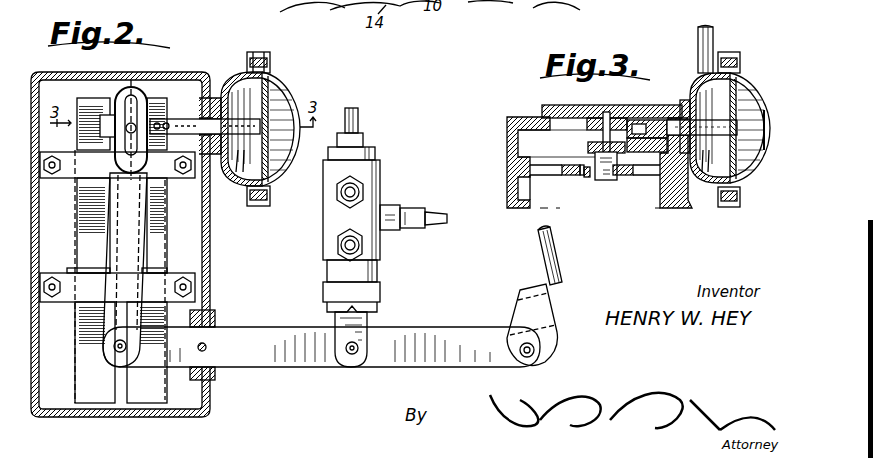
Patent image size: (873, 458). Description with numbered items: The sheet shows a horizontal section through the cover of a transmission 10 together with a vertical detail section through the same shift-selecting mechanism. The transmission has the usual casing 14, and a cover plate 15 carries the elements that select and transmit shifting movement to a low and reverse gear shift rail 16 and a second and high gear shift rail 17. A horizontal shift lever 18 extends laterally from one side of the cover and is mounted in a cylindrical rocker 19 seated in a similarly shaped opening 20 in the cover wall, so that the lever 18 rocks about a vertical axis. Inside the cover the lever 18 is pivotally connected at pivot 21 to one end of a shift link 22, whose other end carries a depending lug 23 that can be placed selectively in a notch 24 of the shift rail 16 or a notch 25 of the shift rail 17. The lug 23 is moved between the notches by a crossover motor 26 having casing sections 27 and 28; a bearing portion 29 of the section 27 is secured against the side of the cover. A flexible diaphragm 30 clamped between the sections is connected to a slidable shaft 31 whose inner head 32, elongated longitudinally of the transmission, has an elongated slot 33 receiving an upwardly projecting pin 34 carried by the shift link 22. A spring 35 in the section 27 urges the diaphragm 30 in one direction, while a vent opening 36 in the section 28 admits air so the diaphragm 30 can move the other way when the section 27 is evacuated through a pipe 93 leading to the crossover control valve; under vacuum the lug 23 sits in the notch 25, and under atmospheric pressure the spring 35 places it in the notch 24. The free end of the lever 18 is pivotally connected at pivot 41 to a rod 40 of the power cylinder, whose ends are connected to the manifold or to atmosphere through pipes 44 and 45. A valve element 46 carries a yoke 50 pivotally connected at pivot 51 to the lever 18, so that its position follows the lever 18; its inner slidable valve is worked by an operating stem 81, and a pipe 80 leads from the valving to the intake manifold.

In FIG. 2, the housing 10 is at (210, 259).
In FIG. 3, the casing 14 is at (507, 183).
In FIG. 2, the cover plate 15 is at (72, 74).
In FIG. 3, the cover plate 15 is at (507, 117).
In FIG. 2, the low and reverse gear shift rail 16 is at (160, 243).
In FIG. 3, the low and reverse gear shift rail 16 is at (621, 165).
In FIG. 2, the second and high gear shift rail 17 is at (78, 226).
In FIG. 3, the second and high gear shift rail 17 is at (571, 177).
In FIG. 2, the shift lever 18 is at (262, 327).
In FIG. 2, the cylindrical rocker 19 is at (214, 374).
In FIG. 2, the opening 20 is at (213, 321).
In FIG. 2, the pivotal connection 21 is at (126, 346).
In FIG. 2, the shift link 22 is at (110, 310).
In FIG. 3, the shift link 22 is at (588, 148).
In FIG. 3, the depending lug 23 is at (596, 182).
In FIG. 3, the notch 24 is at (619, 182).
In FIG. 2, the notch 25 is at (98, 131).
In FIG. 3, the notch 25 is at (582, 177).
In FIG. 2, the crossover motor 26 is at (258, 55).
In FIG. 3, the crossover motor 26 is at (768, 108).
In FIG. 2, the casing section 27 is at (237, 77).
In FIG. 3, the casing section 27 is at (692, 103).
In FIG. 2, the casing section 28 is at (270, 190).
In FIG. 3, the casing section 28 is at (742, 190).
In FIG. 2, the bearing portion 29 is at (204, 104).
In FIG. 3, the bearing portion 29 is at (680, 201).
In FIG. 2, the flexible diaphragm 30 is at (266, 75).
In FIG. 3, the flexible diaphragm 30 is at (746, 73).
In FIG. 2, the slidable shaft 31 is at (186, 128).
In FIG. 3, the slidable shaft 31 is at (668, 120).
In FIG. 2, the head 32 is at (143, 96).
In FIG. 3, the head 32 is at (632, 120).
In FIG. 2, the slot 33 is at (131, 97).
In FIG. 3, the slot 33 is at (597, 118).
In FIG. 2, the pin 34 is at (128, 126).
In FIG. 3, the pin 34 is at (607, 112).
In FIG. 2, the spring 35 is at (237, 174).
In FIG. 3, the spring 35 is at (708, 186).
In FIG. 3, the vent opening 36 is at (767, 159).
In FIG. 2, the rod 40 is at (555, 269).
In FIG. 2, the pivot 41 is at (533, 351).
In FIG. 2, the pipe 44 is at (362, 245).
In FIG. 2, the pipe 45 is at (363, 191).
In FIG. 2, the valve element 46 is at (378, 276).
In FIG. 2, the yoke 50 is at (334, 320).
In FIG. 2, the pivotal connection 51 is at (350, 355).
In FIG. 2, the pipe 80 is at (437, 213).
In FIG. 2, the operating stem 81 is at (357, 123).
In FIG. 3, the pipe 93 is at (713, 35).